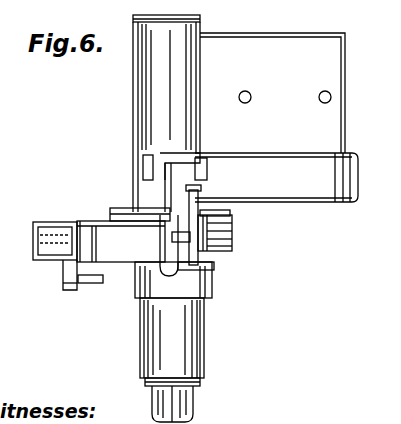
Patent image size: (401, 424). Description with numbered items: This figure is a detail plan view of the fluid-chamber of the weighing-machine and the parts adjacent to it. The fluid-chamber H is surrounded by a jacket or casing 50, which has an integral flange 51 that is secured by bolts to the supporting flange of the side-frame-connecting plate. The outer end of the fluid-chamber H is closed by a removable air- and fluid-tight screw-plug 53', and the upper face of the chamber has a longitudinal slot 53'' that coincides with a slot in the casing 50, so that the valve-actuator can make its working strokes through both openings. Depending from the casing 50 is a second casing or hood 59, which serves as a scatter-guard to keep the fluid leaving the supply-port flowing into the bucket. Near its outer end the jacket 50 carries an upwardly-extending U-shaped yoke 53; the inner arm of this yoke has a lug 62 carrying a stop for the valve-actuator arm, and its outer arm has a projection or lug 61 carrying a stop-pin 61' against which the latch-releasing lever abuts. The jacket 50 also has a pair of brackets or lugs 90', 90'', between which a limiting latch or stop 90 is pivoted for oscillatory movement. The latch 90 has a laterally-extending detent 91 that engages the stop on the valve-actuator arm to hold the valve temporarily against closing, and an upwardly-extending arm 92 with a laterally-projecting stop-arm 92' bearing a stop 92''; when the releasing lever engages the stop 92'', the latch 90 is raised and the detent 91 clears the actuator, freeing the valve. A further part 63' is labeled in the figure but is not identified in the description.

The jacket or casing 50 is at (148, 103).
The flange 51 is at (330, 68).
The hood 59 is at (317, 188).
The limiting latch 90 is at (140, 187).
The bracket 90' is at (203, 166).
The bracket 90'' is at (131, 167).
The limiting stop-arm 91 is at (160, 209).
The upwardly-extending arm 92 is at (197, 222).
The stop-arm 92' is at (155, 245).
The stop 92'' is at (121, 241).
The lug 62 is at (215, 242).
The rim 63' is at (230, 219).
The U-shaped yoke 53 is at (55, 252).
The screw-plug 53' is at (186, 400).
The longitudinal slot 53'' is at (209, 271).
The lug 61 is at (62, 284).
The stop-pin 61' is at (90, 292).
The fluid-chamber H is at (150, 316).